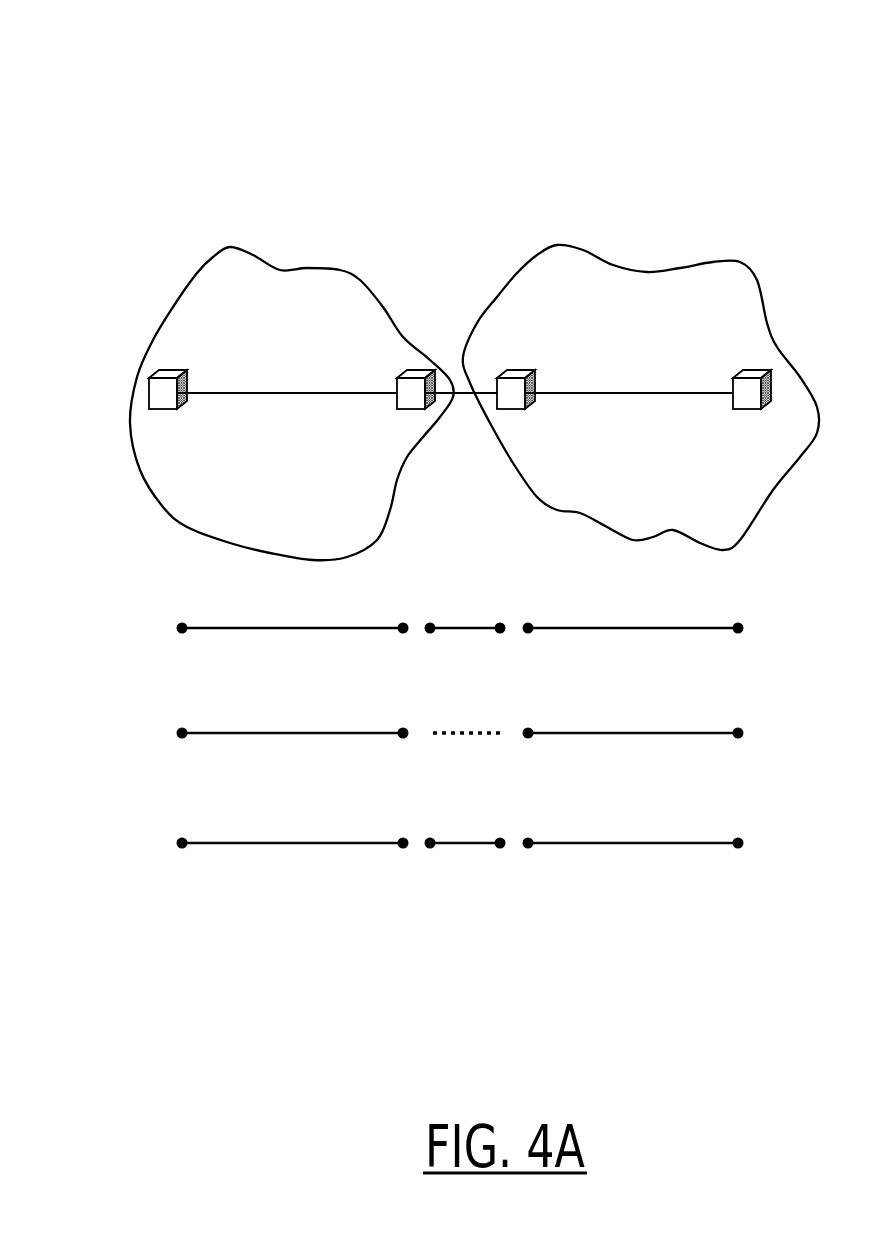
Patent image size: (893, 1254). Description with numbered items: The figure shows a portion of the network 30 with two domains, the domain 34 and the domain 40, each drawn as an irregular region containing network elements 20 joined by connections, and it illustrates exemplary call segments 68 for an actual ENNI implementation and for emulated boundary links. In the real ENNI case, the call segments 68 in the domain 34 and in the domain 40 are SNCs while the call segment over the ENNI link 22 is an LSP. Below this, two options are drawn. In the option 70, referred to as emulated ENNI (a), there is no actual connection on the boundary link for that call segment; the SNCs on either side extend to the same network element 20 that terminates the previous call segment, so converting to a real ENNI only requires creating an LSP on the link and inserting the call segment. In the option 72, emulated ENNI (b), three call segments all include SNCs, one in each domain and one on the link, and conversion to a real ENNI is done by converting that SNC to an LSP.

The network 30 is at (712, 70).
The domain 34 is at (300, 268).
The domain 40 is at (656, 373).
The network element 20 is at (755, 370).
The call segments 68 is at (768, 568).
The ENNI link 22 is at (463, 627).
The option 70 is at (394, 710).
The option 72 is at (394, 818).